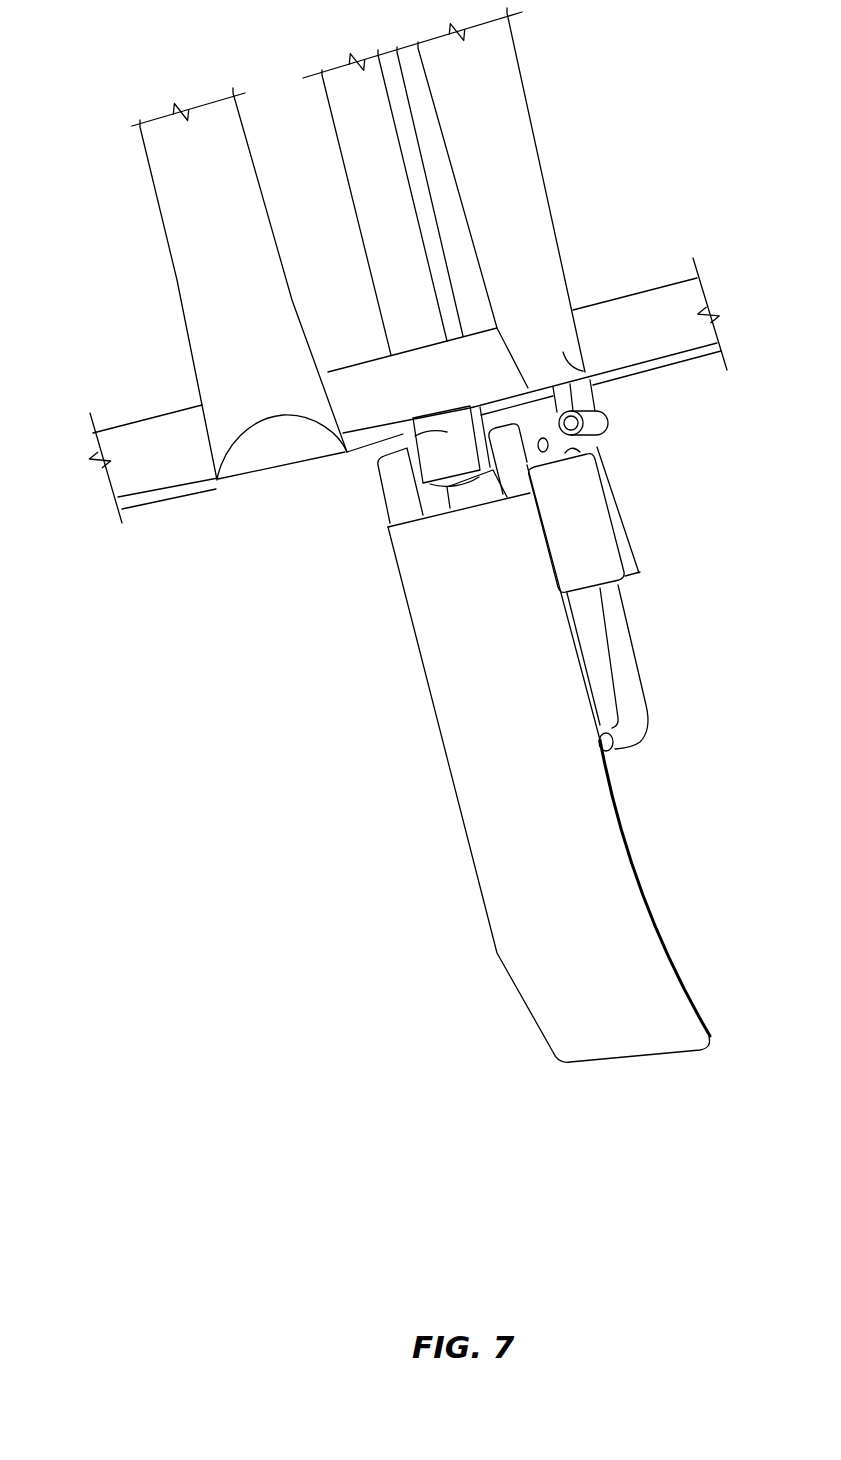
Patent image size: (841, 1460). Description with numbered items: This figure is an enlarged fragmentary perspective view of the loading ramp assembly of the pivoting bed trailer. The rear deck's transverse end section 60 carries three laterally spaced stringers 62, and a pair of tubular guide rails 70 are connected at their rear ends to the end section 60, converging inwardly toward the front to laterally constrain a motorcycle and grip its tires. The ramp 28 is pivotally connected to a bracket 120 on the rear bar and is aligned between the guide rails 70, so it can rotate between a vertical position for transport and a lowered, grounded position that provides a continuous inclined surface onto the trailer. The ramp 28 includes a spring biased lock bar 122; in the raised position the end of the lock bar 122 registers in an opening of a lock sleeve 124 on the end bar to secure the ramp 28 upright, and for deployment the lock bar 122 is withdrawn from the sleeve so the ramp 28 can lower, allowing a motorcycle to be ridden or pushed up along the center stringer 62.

The ramp 28 is at (358, 835).
The transverse end section 60 is at (155, 443).
The stringers 62 is at (387, 152).
The tubular guide rails 70 is at (173, 202).
The bracket 120 is at (413, 433).
The spring biased lock bar 122 is at (628, 680).
The lock sleeve 124 is at (603, 433).